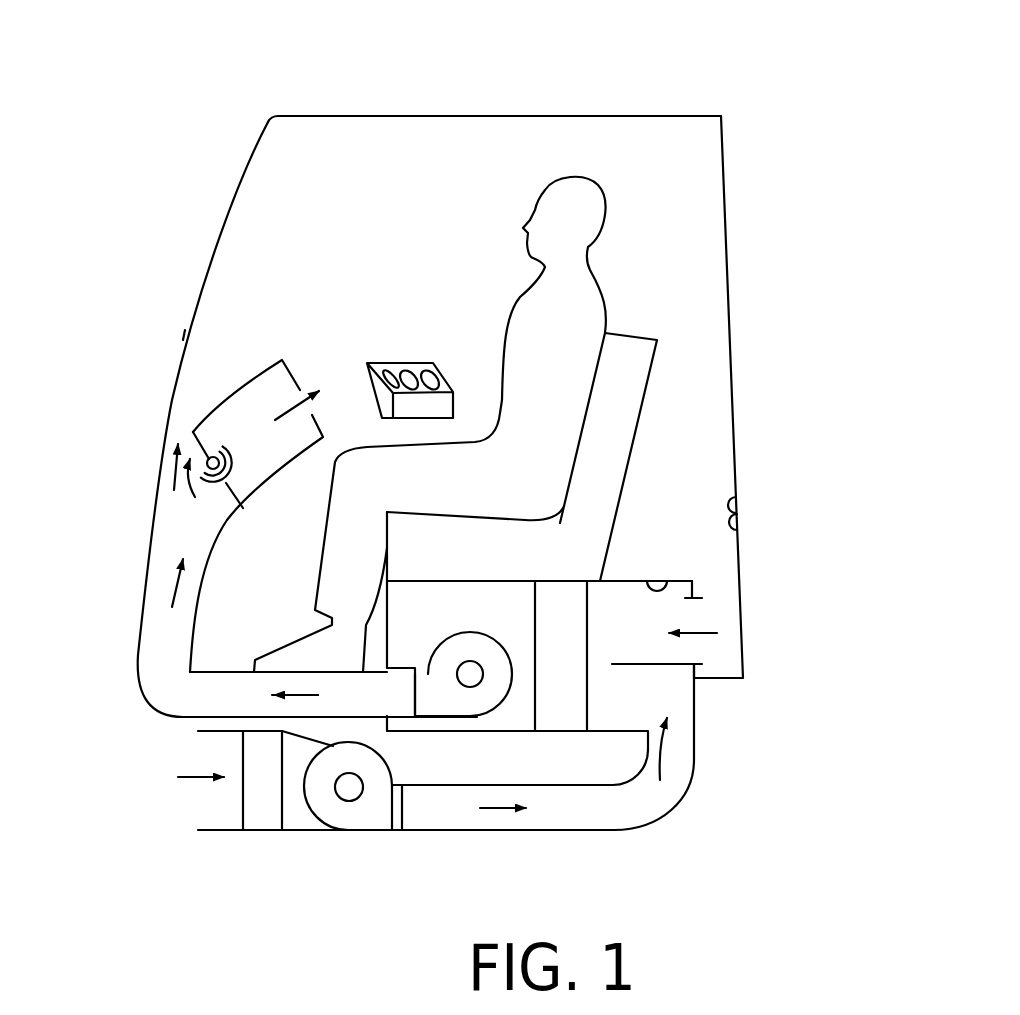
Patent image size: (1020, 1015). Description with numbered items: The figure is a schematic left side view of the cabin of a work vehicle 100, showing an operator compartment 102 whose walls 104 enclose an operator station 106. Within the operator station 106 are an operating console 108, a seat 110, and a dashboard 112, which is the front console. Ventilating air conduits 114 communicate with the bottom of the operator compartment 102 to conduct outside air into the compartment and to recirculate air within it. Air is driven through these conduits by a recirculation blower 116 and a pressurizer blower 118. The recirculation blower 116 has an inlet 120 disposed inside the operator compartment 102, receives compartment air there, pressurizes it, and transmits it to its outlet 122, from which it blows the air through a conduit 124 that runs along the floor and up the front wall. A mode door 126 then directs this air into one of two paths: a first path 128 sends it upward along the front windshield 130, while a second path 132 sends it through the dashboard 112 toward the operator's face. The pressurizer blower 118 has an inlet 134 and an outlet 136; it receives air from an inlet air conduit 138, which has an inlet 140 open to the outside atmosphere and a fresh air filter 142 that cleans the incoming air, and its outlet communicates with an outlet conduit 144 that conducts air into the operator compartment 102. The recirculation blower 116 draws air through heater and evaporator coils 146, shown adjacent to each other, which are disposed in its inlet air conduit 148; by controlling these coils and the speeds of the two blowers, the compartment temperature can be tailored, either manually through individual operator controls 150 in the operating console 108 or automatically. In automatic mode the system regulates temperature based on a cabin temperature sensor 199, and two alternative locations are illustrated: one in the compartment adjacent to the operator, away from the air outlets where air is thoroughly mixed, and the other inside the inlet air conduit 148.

The work vehicle 100 is at (157, 120).
The operator compartment 102 is at (302, 116).
The walls 104 is at (430, 116).
The operator station 106 is at (485, 220).
The operating console 108 is at (392, 363).
The seat 110 is at (618, 333).
The dashboard 112 is at (247, 373).
The ventilating air conduits 114 is at (722, 729).
The recirculation blower 116 is at (462, 610).
The pressurizer blower 118 is at (331, 831).
The inlet 120 is at (483, 667).
The outlet 122 is at (423, 668).
The conduit 124 is at (198, 608).
The mode door 126 is at (238, 453).
The first path 128 is at (165, 478).
The front windshield 130 is at (183, 334).
The second path 132 is at (290, 447).
The inlet 134 is at (362, 777).
The outlet 136 is at (381, 822).
The inlet air conduit 138 is at (300, 819).
The inlet 140 is at (205, 805).
The fresh air filter 142 is at (276, 820).
The outlet conduit 144 is at (606, 830).
The heater and evaporator coils 146 is at (557, 581).
The inlet air conduit 148 is at (640, 575).
The individual operator controls 150 is at (363, 338).
The cabin temperature sensor 199 is at (740, 533).